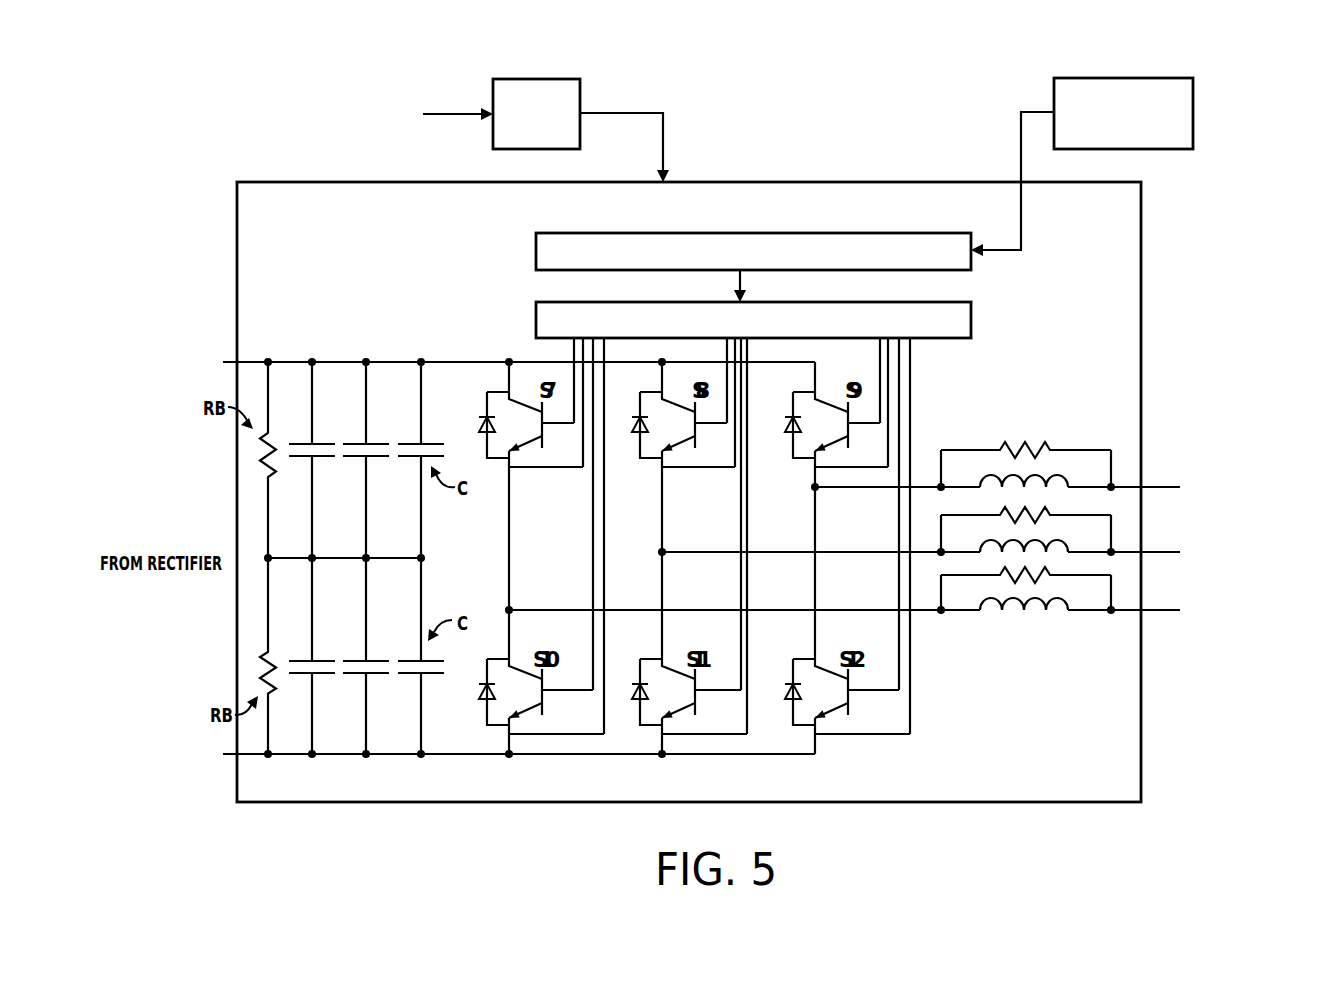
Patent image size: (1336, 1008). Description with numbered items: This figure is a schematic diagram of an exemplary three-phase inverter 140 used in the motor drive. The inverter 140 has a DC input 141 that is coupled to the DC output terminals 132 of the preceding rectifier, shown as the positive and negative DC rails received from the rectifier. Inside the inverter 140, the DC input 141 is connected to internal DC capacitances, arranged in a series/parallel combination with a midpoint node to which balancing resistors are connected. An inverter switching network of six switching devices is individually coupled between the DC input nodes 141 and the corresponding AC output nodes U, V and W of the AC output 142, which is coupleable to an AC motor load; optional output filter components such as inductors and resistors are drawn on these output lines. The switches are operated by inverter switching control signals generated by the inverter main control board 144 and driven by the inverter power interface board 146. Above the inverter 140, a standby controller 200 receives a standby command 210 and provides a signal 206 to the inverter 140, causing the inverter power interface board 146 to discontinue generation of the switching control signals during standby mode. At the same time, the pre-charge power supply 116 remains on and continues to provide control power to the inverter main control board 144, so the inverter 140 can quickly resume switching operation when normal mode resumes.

The inverter 140 is at (195, 73).
The standby controller 200 is at (528, 79).
The standby command signal 210 is at (462, 113).
The standby controller output signal 206 is at (633, 115).
The pre-charge power supply 116 is at (1124, 78).
The inverter main control board 144 is at (541, 233).
The inverter power interface board 146 is at (541, 302).
The DC output 132 is at (180, 343).
The DC input 141 is at (220, 786).
The AC output 142 is at (1187, 436).